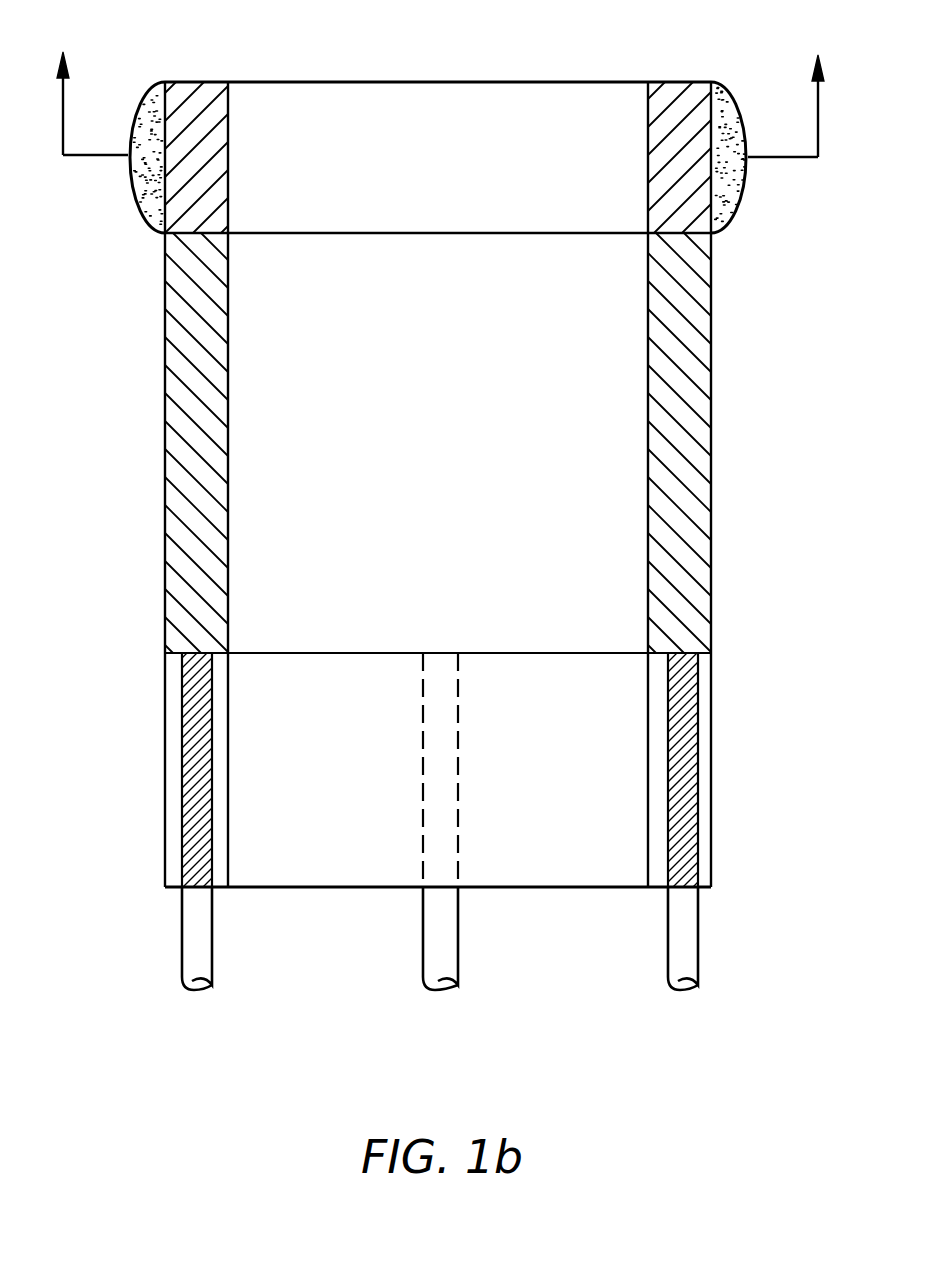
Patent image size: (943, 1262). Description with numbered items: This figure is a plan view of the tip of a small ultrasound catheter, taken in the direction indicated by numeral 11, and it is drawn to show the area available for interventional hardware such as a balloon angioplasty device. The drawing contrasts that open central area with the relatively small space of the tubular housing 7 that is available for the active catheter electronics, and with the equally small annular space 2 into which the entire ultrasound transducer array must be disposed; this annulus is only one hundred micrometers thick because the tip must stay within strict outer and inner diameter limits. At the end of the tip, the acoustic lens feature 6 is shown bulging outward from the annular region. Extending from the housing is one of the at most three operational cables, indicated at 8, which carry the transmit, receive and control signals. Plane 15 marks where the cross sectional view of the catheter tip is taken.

The viewing direction 11 is at (413, 46).
The annular space 2 is at (218, 163).
The acoustic lens feature 6 is at (148, 214).
The tubular housing 7 is at (165, 471).
The cable 8 is at (213, 818).
The cross-section plane 15 is at (107, 152).